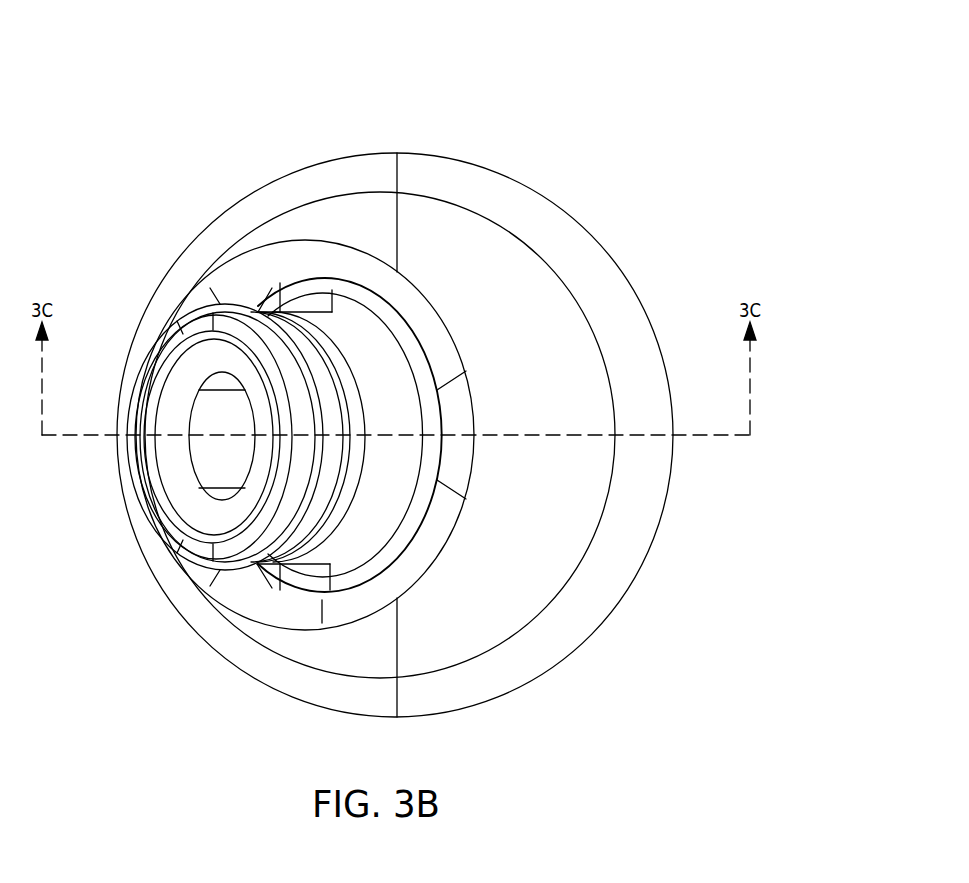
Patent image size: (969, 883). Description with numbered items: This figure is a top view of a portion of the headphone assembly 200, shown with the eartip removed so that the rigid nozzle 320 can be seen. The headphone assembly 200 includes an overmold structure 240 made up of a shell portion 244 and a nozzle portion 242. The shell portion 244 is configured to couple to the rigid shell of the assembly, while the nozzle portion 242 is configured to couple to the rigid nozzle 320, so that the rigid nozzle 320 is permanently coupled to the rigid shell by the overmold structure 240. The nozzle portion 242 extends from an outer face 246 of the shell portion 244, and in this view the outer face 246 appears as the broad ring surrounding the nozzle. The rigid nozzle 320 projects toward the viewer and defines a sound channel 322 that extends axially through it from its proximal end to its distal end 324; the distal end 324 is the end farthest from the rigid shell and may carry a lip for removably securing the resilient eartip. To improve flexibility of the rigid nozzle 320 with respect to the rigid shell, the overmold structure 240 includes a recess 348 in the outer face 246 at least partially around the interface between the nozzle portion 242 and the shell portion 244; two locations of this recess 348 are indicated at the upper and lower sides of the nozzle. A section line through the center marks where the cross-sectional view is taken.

The headphone assembly 200 is at (603, 94).
The overmold structure 240 is at (455, 108).
The nozzle portion 242 is at (357, 240).
The shell portion 244 is at (407, 222).
The outer face 246 is at (527, 369).
The rigid nozzle 320 is at (287, 310).
The sound channel 322 is at (215, 470).
The distal end 324 is at (141, 368).
The recess 348 is at (308, 303).